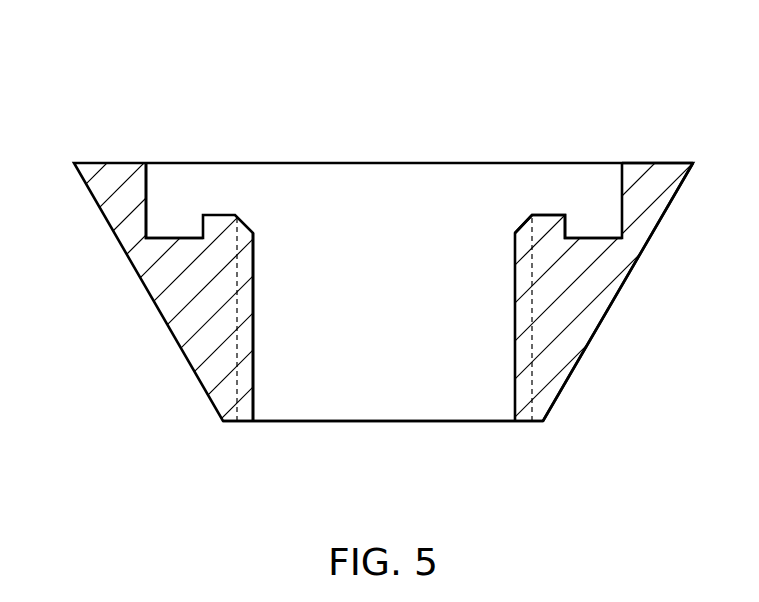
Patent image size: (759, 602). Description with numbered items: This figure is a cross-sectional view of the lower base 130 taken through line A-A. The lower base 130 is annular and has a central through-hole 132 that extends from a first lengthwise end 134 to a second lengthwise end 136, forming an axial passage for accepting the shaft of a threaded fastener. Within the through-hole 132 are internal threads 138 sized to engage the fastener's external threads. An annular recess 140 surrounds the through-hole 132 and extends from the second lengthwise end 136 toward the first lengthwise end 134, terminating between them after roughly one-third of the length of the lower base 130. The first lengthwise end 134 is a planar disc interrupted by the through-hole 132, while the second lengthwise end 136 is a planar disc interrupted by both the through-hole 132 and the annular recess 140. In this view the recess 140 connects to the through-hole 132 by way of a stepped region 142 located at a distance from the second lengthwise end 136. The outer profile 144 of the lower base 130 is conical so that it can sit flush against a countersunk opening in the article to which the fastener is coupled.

The lower base 130 is at (623, 60).
The central through-hole 132 is at (253, 393).
The first lengthwise end 134 is at (532, 423).
The second lengthwise end 136 is at (655, 163).
The internal threads 138 is at (258, 322).
The annular recess 140 is at (167, 238).
The stepped region 142 is at (550, 213).
The outer profile 144 is at (632, 263).